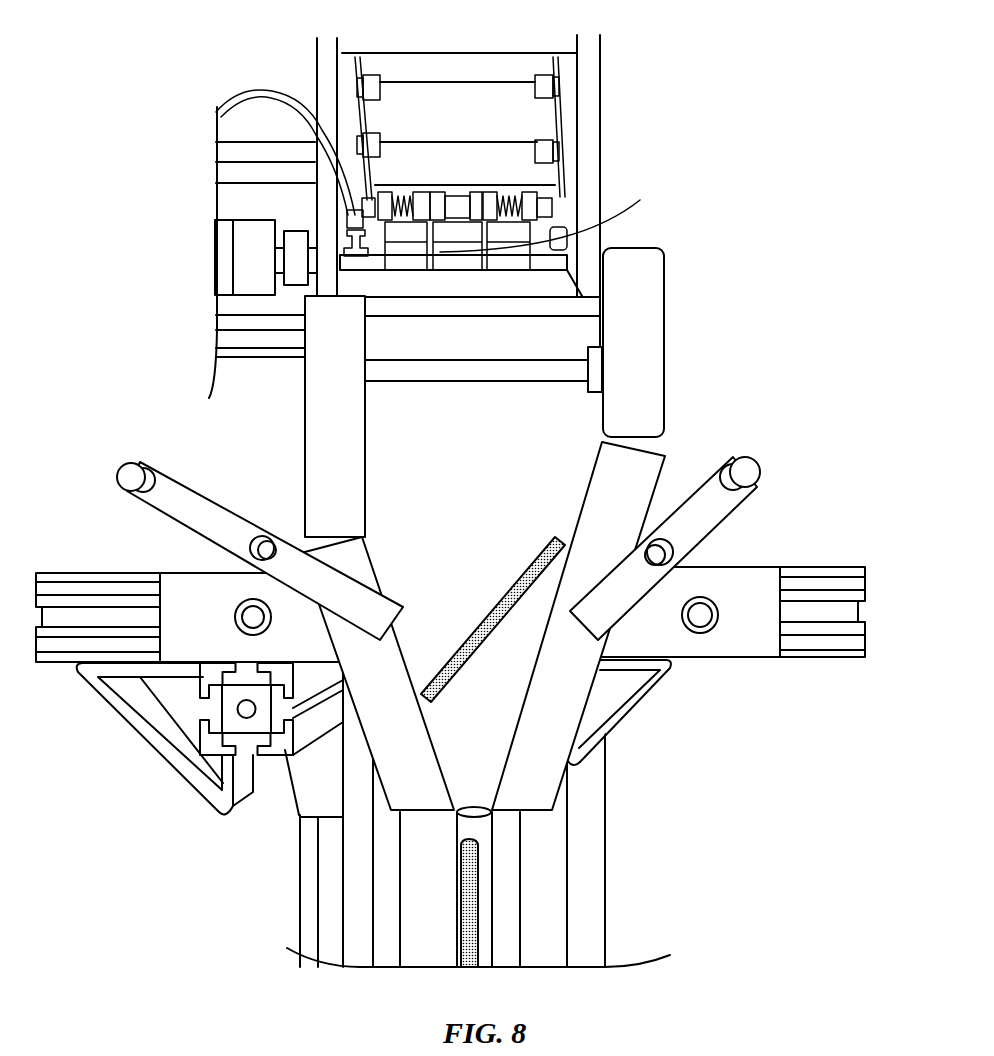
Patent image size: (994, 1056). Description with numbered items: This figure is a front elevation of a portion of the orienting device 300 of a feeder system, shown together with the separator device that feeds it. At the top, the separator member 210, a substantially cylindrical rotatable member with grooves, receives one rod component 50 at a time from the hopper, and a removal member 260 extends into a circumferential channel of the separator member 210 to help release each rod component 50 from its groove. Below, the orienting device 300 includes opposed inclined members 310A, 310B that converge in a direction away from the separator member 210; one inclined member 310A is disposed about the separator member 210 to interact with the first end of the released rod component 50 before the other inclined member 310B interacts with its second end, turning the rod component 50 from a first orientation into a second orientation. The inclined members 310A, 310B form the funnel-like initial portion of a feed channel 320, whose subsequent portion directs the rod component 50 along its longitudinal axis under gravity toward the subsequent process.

The rod component 50 is at (462, 917).
The separator member 210 is at (458, 197).
The removal member 260 is at (547, 186).
The orienting device 300 is at (684, 706).
The inclined member 310A is at (390, 695).
The inclined member 310B is at (542, 777).
The feed channel 320 is at (480, 833).